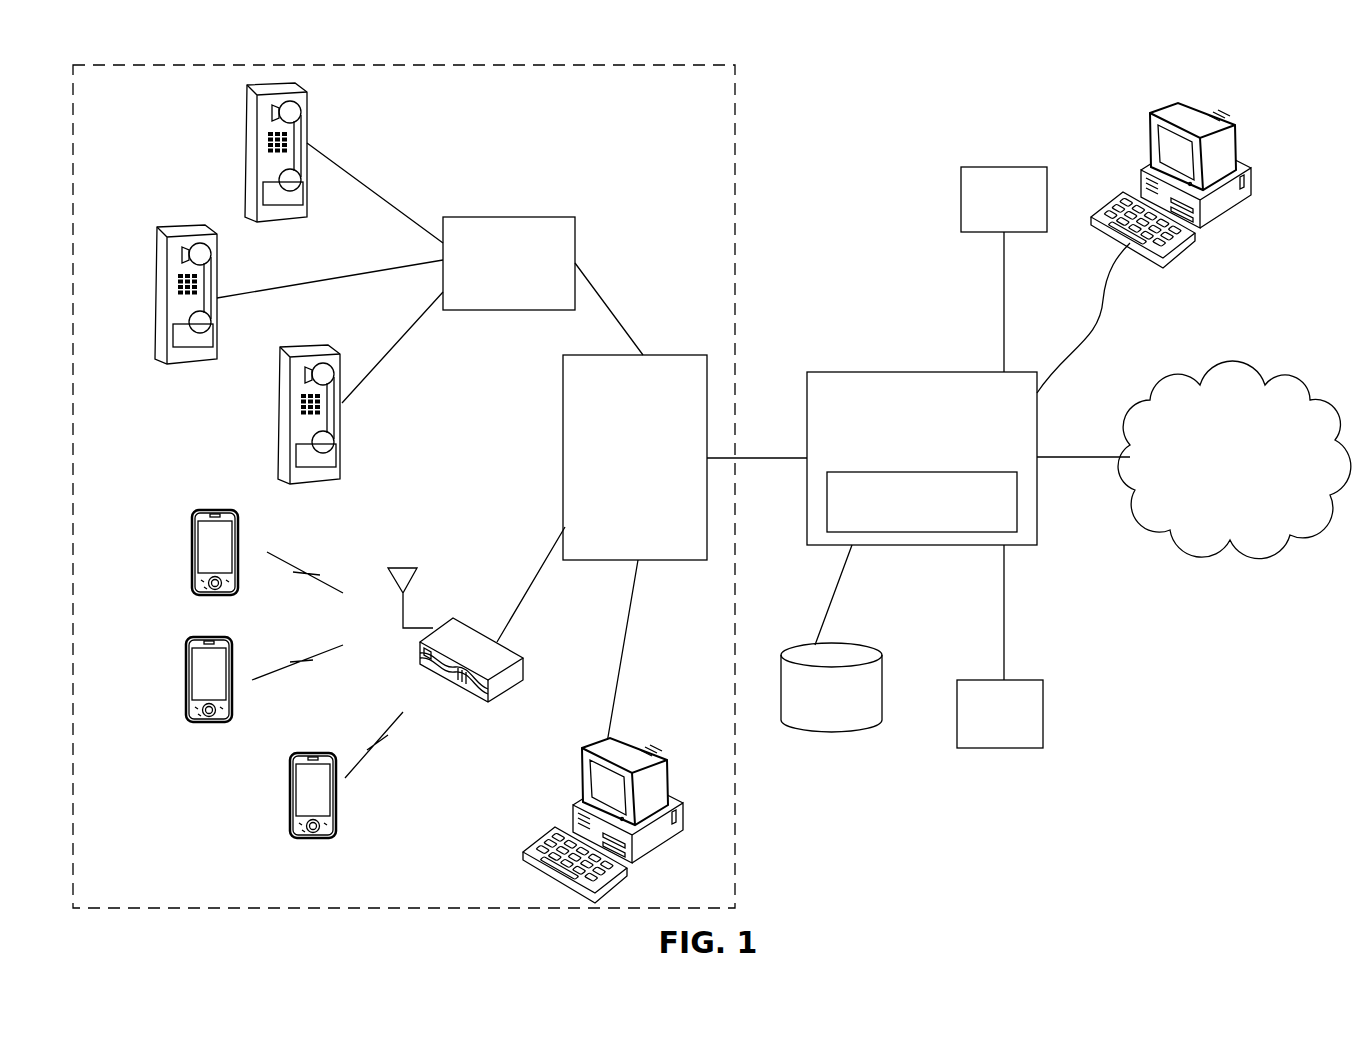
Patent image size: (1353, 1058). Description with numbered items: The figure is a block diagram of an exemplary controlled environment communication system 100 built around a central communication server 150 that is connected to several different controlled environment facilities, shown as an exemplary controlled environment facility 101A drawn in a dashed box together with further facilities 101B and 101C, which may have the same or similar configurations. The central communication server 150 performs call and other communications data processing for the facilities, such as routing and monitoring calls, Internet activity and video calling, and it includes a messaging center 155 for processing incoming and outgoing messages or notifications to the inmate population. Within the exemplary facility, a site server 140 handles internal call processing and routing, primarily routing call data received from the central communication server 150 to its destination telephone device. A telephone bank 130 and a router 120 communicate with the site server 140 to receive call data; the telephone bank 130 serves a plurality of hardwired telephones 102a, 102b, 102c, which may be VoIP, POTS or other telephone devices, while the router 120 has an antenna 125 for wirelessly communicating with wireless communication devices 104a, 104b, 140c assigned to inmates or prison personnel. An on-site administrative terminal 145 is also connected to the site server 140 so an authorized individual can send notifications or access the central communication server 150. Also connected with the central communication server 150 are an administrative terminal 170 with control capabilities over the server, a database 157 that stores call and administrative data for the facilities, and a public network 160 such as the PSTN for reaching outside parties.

The controlled environment communication system 100 is at (1325, 66).
The exemplary controlled environment facility 101A is at (735, 108).
The controlled environment facility 101B is at (1004, 269).
The controlled environment facility 101C is at (1000, 646).
The hardwired telephone 102a is at (245, 133).
The hardwired telephone 102b is at (155, 265).
The hardwired telephone 102c is at (278, 395).
The wireless communication device 104a is at (192, 542).
The wireless communication device 104b is at (186, 676).
The wireless communication device 140c is at (290, 797).
The router 120 is at (468, 627).
The antenna 125 is at (405, 568).
The telephone bank 130 is at (475, 217).
The site server 140 is at (652, 549).
The on-site administrative terminal 145 is at (580, 772).
The central communication server 150 is at (860, 372).
The messaging center 155 is at (1017, 503).
The database 157 is at (872, 645).
The network 160 is at (1234, 460).
The administrative terminal 170 is at (1160, 108).